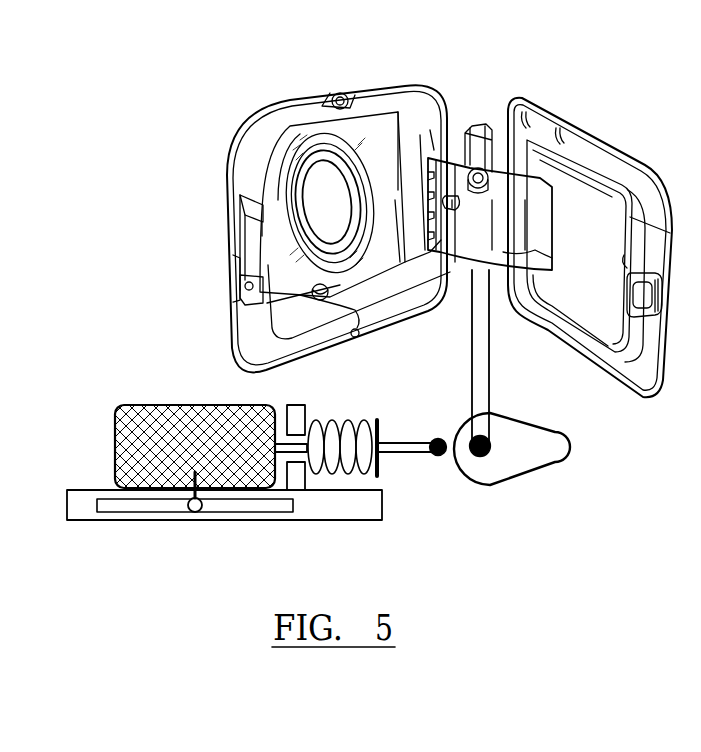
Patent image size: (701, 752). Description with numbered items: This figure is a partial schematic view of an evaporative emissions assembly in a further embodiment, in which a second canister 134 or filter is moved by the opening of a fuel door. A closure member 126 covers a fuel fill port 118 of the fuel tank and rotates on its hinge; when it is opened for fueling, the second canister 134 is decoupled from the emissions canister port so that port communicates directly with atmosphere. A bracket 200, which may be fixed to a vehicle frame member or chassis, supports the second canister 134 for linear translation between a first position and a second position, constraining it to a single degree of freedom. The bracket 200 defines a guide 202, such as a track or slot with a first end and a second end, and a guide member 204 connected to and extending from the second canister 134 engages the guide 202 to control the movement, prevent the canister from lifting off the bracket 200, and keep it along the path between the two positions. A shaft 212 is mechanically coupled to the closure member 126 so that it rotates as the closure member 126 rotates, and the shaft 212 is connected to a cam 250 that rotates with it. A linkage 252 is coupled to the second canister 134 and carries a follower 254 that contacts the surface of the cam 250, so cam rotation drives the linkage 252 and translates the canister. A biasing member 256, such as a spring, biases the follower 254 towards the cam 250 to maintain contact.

The fuel fill port 118 is at (325, 165).
The closure member 126 is at (603, 158).
The second canister 134 is at (160, 425).
The bracket 200 is at (127, 513).
The guide 202 is at (258, 513).
The guide member 204 is at (197, 513).
The shaft 212 is at (490, 360).
The cam 250 is at (522, 478).
The linkage 252 is at (418, 458).
The follower 254 is at (435, 440).
The biasing member 256 is at (348, 420).